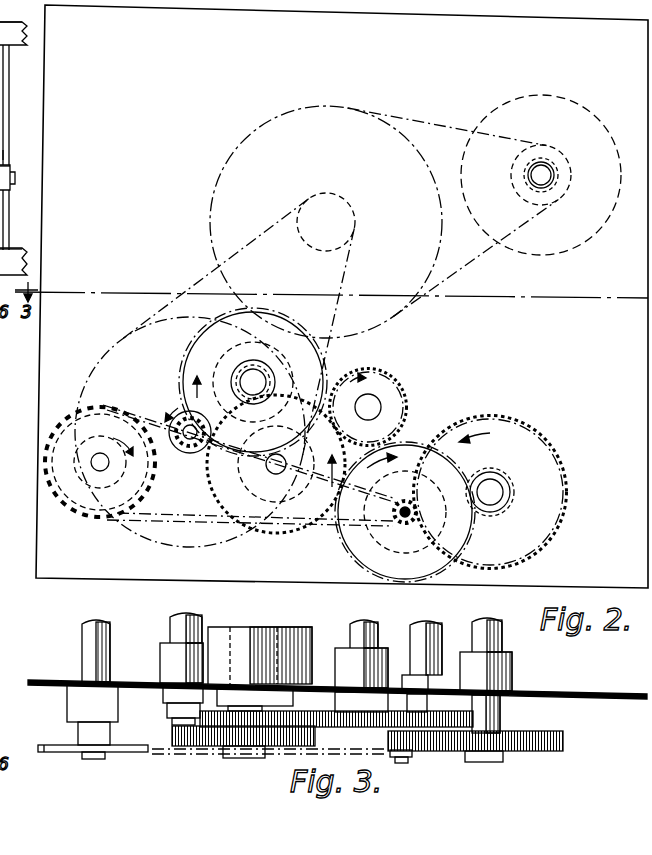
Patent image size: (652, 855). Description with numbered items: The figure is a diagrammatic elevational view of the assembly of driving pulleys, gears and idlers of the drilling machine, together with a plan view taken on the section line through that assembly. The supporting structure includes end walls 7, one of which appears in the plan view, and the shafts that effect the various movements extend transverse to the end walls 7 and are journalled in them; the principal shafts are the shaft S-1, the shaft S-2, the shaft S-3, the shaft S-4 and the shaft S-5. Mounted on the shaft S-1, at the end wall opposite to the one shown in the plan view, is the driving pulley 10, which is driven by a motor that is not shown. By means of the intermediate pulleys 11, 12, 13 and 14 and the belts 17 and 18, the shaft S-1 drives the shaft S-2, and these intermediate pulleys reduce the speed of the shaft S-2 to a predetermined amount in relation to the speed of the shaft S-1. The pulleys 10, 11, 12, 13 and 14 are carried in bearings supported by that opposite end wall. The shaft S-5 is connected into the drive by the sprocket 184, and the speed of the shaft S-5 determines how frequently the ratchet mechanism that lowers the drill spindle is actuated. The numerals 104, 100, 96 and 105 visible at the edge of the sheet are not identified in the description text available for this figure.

In FIG. 2, the driving pulley 10 is at (608, 128).
In FIG. 2, the intermediate pulley 11 is at (544, 152).
In FIG. 2, the intermediate pulley 12 is at (240, 148).
In FIG. 2, the intermediate pulley 13 is at (330, 196).
In FIG. 2, the intermediate pulley 14 is at (136, 345).
In FIG. 2, the belt 17 is at (458, 122).
In FIG. 2, the belt 18 is at (208, 268).
In FIG. 2, the sprocket 184 is at (112, 406).
In FIG. 3, the sprocket 184 is at (63, 752).
In FIG. 2, the end wall 7 is at (36, 553).
In FIG. 3, the end wall 7 is at (590, 694).
In FIG. 2, the shaft S-1 is at (548, 178).
In FIG. 2, the shaft S-2 is at (190, 454).
In FIG. 3, the shaft S-2 is at (170, 630).
In FIG. 2, the shaft S-3 is at (380, 406).
In FIG. 3, the shaft S-3 is at (350, 635).
In FIG. 2, the shaft S-4 is at (500, 490).
In FIG. 3, the shaft S-4 is at (502, 643).
In FIG. 2, the shaft S-5 is at (101, 466).
In FIG. 3, the shaft S-5 is at (85, 652).
In FIG. 2, the part 104 is at (15, 30).
In FIG. 2, the part 100 is at (3, 150).
In FIG. 2, the part 96 is at (6, 168).
In FIG. 2, the part 105 is at (2, 252).